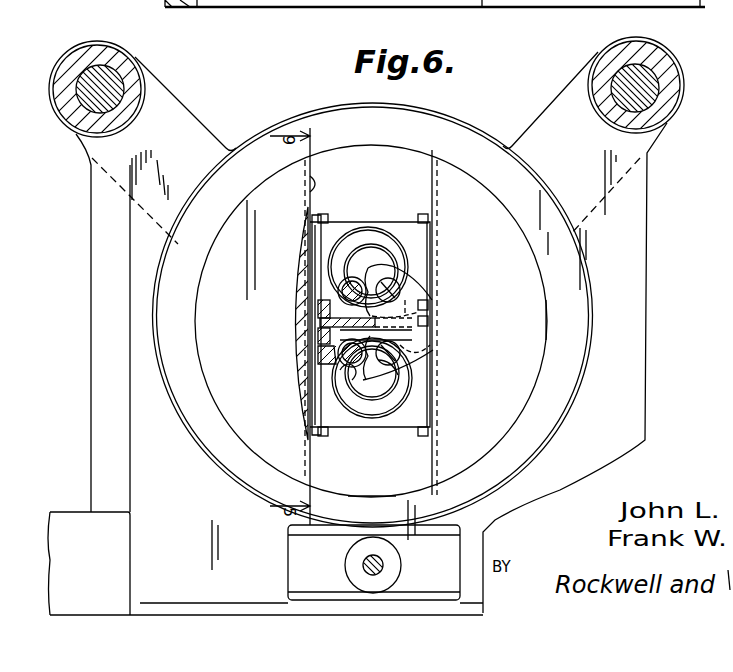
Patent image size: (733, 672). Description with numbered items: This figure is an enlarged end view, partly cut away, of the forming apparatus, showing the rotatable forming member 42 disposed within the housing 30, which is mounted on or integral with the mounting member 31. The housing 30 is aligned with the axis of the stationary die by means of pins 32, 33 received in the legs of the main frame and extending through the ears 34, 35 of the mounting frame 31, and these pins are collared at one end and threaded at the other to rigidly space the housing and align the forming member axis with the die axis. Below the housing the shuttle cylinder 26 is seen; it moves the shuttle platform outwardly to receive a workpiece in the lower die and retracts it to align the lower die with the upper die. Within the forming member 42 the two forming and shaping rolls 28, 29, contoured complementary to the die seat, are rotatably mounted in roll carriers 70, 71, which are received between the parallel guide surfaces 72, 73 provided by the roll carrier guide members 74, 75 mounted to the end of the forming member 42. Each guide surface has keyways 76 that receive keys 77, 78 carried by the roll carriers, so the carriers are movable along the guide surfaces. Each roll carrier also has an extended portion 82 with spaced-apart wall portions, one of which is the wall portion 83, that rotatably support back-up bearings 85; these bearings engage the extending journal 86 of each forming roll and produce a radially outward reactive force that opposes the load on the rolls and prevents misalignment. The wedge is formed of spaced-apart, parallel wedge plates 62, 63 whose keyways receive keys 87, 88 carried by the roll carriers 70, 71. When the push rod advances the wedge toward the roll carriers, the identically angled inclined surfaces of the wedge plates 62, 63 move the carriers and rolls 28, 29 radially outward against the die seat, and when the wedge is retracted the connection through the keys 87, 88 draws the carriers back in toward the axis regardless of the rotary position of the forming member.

The shuttle cylinder 26 is at (345, 568).
The forming roll 28 is at (372, 236).
The forming roll 29 is at (372, 410).
The housing 30 is at (472, 128).
The mounting member 31 is at (116, 562).
The pin 32 is at (106, 88).
The pin 33 is at (648, 88).
The ear 34 is at (108, 44).
The ear 35 is at (683, 100).
The rotatable forming member 42 is at (406, 165).
The wedge plate 62 is at (442, 296).
The wedge plate 63 is at (296, 350).
The roll carrier 70 is at (418, 236).
The roll carrier 71 is at (418, 402).
The guide surface 72 is at (434, 178).
The guide surface 73 is at (312, 185).
The roll carrier guide member 74 is at (508, 358).
The roll carrier guide member 75 is at (250, 415).
The keyway 76 is at (302, 238).
The key 77 is at (430, 216).
The key 78 is at (302, 258).
The extended portion 82 is at (418, 344).
The wall portion 83 is at (396, 392).
The back-up bearing 85 is at (316, 368).
The journal 86 is at (348, 392).
The key 87 is at (300, 312).
The key 88 is at (300, 326).